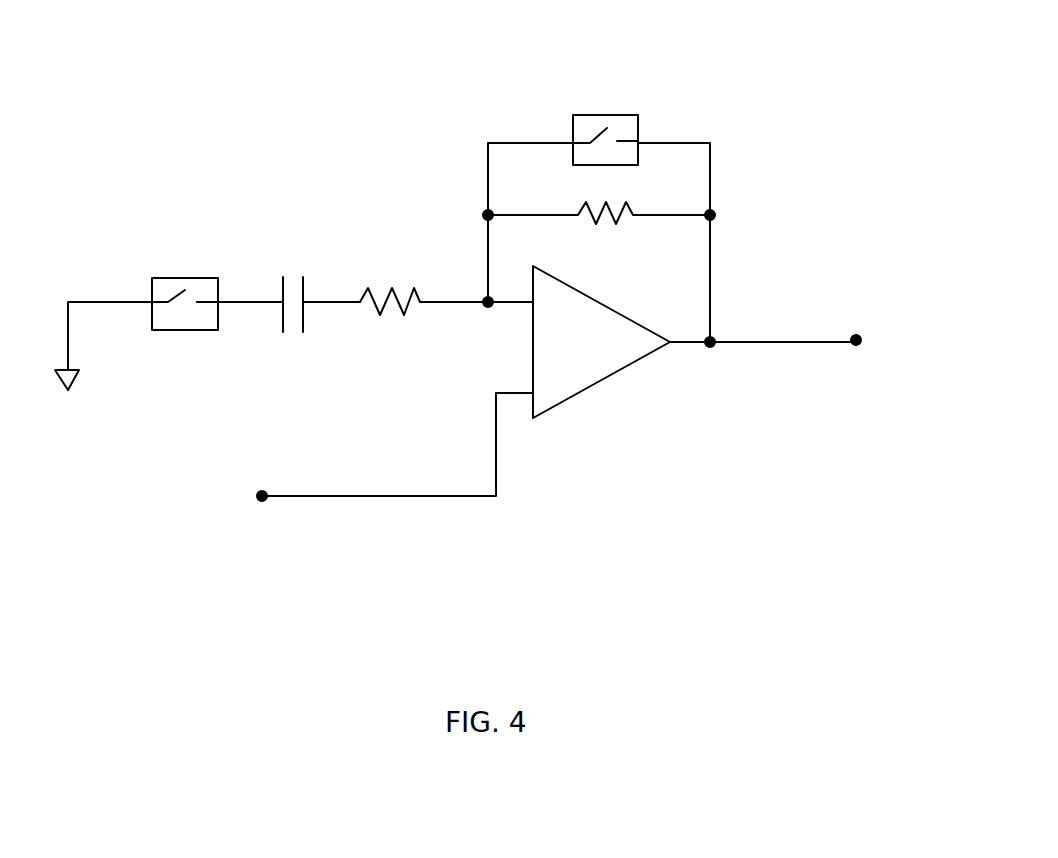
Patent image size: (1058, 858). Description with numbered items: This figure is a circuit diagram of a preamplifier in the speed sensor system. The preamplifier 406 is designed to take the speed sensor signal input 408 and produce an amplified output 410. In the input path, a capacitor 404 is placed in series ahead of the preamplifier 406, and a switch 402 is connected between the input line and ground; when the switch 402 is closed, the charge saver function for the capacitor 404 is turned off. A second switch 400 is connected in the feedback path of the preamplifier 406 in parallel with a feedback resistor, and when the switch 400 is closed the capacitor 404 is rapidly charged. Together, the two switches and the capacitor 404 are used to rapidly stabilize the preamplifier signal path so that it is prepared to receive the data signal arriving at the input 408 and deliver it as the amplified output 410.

The switch 400 is at (624, 122).
The switch 402 is at (203, 282).
The capacitor 404 is at (291, 345).
The preamplifier 406 is at (608, 361).
The speed sensor signal input 408 is at (262, 496).
The amplified output 410 is at (856, 340).